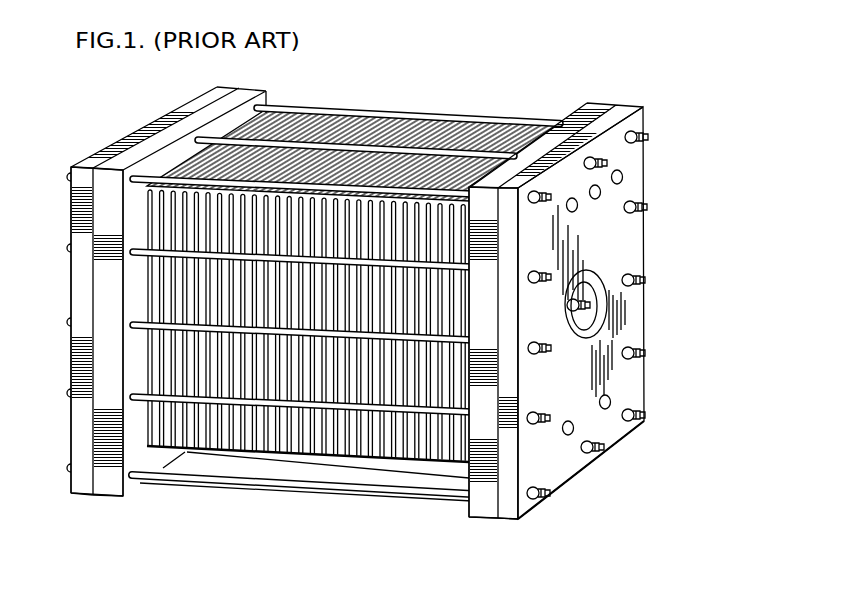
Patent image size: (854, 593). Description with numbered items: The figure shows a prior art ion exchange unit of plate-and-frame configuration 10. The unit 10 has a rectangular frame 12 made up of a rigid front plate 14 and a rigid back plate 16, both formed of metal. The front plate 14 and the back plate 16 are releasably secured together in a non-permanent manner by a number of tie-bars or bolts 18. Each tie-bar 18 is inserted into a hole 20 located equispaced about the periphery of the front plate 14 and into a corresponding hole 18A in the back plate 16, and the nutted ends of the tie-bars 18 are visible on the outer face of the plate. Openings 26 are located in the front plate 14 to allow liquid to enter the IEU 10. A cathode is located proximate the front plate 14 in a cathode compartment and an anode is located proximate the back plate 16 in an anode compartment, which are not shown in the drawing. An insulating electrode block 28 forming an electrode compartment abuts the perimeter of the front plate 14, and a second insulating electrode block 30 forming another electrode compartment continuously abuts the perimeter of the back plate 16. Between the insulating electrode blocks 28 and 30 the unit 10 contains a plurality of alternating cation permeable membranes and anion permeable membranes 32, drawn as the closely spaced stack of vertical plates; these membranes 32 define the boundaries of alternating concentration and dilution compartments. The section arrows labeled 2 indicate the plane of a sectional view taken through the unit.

The section line 2- 2 is at (13, 368).
The prior art IEU of plate-and-frame configuration 10 is at (519, 103).
The rectangular frame 12 is at (121, 158).
The front plate 14 is at (505, 512).
The back plate 16 is at (82, 488).
The tie-bars or bolts 18 is at (374, 110).
The holes in back plate 18A is at (143, 477).
The hole 20 is at (640, 130).
The openings 26 is at (612, 398).
The insulating electrode block 28 is at (478, 508).
The insulating electrode block 30 is at (108, 488).
The alternating cation permeable membranes and anion permeable membranes 32 is at (330, 470).